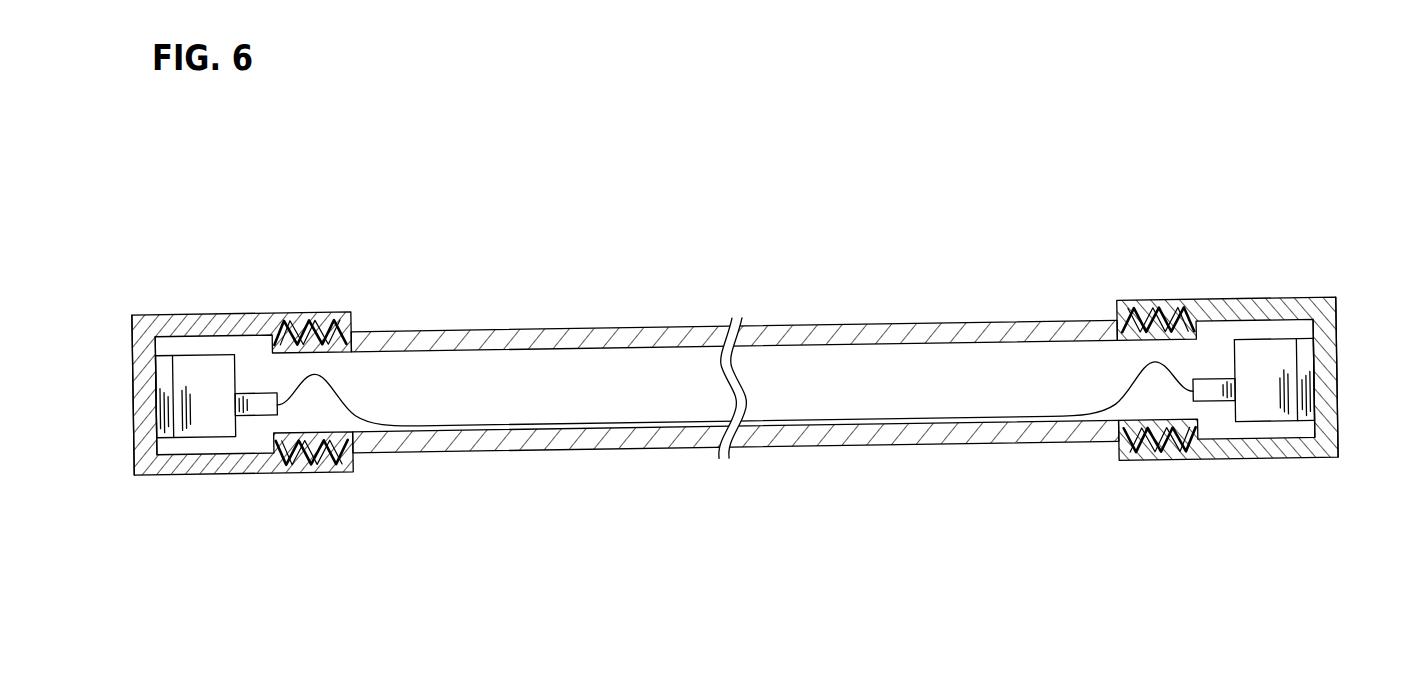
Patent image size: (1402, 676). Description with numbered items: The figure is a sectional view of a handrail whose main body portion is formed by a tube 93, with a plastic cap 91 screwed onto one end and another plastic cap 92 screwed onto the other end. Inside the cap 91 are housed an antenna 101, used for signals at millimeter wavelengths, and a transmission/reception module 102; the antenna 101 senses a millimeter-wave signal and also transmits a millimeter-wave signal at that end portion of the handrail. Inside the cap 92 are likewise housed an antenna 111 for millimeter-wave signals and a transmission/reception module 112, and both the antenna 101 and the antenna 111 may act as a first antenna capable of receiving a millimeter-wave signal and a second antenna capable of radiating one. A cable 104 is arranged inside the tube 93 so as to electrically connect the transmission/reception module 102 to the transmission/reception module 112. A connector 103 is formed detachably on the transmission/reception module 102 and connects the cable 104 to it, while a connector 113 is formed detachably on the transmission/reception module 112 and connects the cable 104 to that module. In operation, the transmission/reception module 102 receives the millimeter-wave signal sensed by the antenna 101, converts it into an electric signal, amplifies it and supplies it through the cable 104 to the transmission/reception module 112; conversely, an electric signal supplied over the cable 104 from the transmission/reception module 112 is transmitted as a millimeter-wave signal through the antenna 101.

The cap 91 is at (205, 315).
The cap 92 is at (1253, 297).
The tube 93 is at (875, 323).
The antenna 101 is at (138, 460).
The transmission/reception module 102 is at (203, 437).
The connector 103 is at (257, 417).
The cable 104 is at (335, 397).
The antenna 111 is at (1335, 433).
The transmission/reception module 112 is at (1277, 422).
The connector 113 is at (1218, 403).